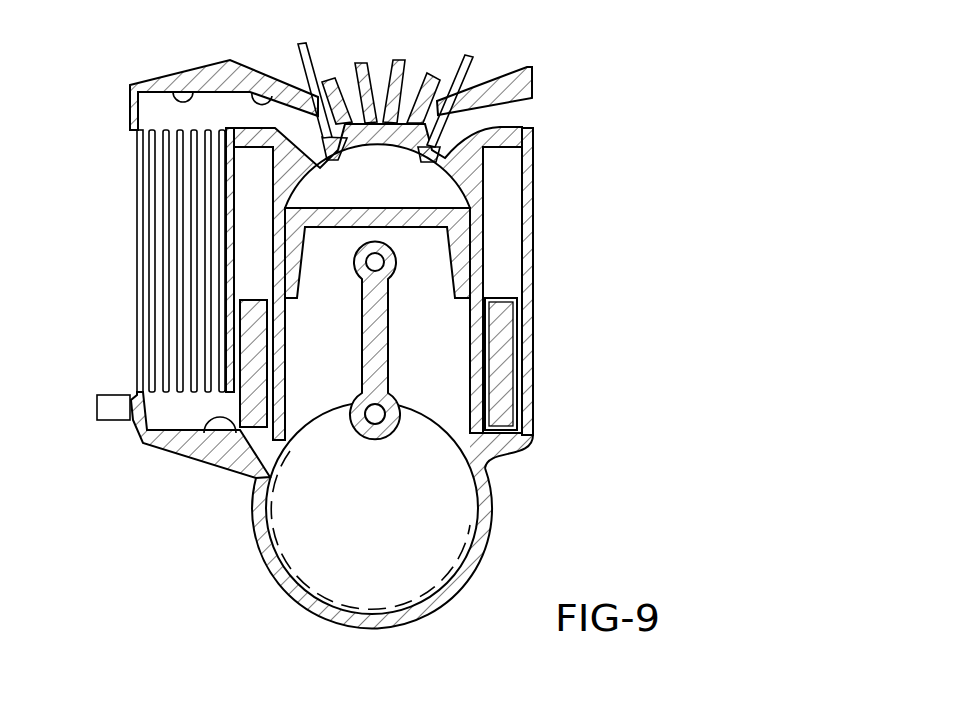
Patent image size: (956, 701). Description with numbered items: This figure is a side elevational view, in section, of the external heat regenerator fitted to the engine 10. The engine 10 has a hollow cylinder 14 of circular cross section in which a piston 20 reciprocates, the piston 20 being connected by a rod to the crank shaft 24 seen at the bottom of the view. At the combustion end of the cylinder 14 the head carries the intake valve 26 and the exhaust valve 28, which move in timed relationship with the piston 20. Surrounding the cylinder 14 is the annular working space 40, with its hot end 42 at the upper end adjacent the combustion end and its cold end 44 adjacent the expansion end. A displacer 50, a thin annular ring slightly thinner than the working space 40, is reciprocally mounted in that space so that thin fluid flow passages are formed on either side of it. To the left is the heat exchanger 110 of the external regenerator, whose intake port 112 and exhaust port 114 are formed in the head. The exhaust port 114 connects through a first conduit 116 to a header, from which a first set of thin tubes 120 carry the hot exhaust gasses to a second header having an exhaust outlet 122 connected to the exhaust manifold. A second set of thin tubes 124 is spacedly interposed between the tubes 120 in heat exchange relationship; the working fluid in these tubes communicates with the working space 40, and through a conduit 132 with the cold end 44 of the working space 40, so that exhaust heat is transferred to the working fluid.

The engine 10 is at (93, 118).
The cylinder 14 is at (461, 403).
The piston 20 is at (464, 272).
The crank shaft 24 is at (464, 531).
The intake valve 26 is at (466, 56).
The exhaust valve 28 is at (304, 46).
The working space 40 is at (506, 230).
The hot end 42 is at (241, 160).
The cold end 44 is at (260, 452).
The displacer 50 is at (503, 341).
The heat exchanger 110 is at (126, 255).
The intake port 112 is at (526, 101).
The exhaust port 114 is at (258, 93).
The first conduit 116 is at (176, 92).
The first set of thin tubes 120 is at (140, 304).
The exhaust outlet 122 is at (110, 421).
The second set of thin tubes 124 is at (150, 347).
The conduit 132 is at (204, 433).